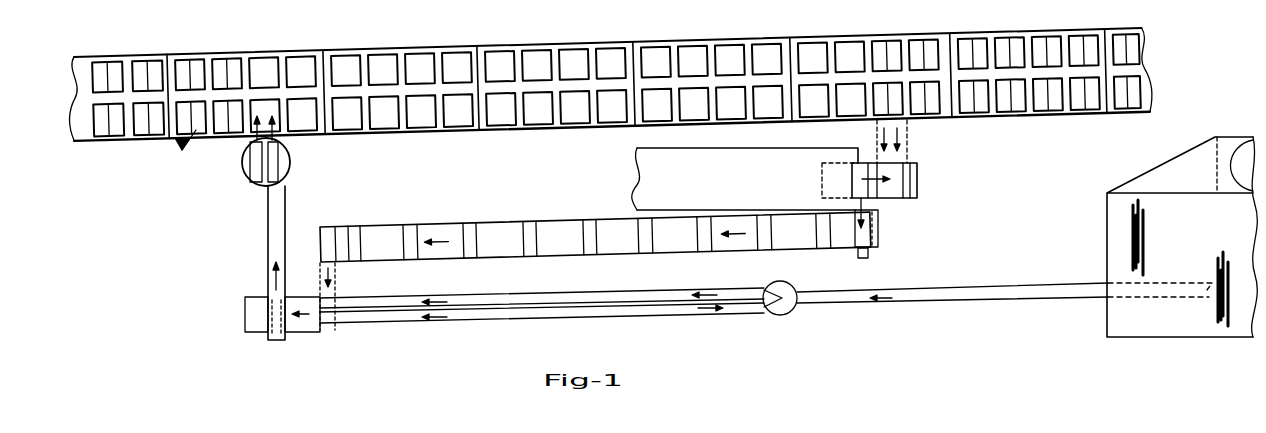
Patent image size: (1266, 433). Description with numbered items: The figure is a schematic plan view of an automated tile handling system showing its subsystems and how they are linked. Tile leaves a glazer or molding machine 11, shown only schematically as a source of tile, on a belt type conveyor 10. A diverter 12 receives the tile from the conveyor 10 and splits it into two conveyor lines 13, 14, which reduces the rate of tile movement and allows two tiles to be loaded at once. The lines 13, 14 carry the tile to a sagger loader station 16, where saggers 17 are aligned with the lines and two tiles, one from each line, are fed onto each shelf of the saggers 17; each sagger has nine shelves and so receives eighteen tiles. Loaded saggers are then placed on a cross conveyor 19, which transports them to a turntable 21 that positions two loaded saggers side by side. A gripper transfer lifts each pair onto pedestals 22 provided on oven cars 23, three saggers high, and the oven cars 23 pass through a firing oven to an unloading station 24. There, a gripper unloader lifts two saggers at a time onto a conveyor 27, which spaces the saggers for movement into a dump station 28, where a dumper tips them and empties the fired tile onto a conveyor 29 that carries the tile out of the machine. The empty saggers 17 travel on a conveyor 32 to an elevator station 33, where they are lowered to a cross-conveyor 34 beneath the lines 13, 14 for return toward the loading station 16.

The belt type conveyor 10 is at (936, 305).
The glazer or molding machine 11 is at (1156, 338).
The diverter 12 is at (782, 316).
The conveyor line 13 is at (601, 294).
The conveyor line 14 is at (605, 323).
The sagger loader station 16 is at (328, 332).
The saggers 17 is at (661, 206).
The cross conveyor 19 is at (286, 223).
The turntable 21 is at (291, 164).
The pedestals 22 is at (262, 64).
The oven cars 23 is at (290, 56).
The unloading station 24 is at (928, 118).
The conveyor 27 is at (918, 183).
The dump station 28 is at (845, 176).
The conveyor 29 is at (738, 160).
The conveyor 32 is at (798, 248).
The elevator station 33 is at (337, 228).
The cross-conveyor 34 is at (334, 285).